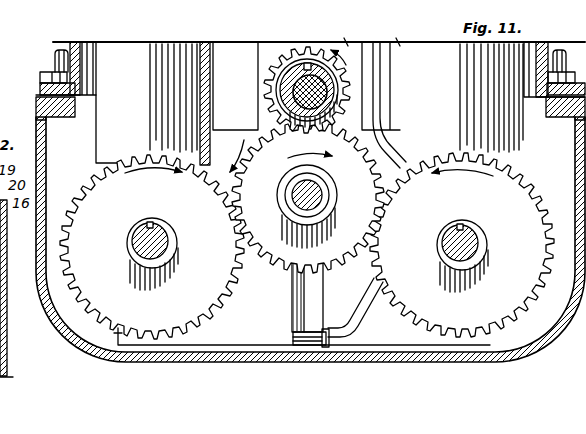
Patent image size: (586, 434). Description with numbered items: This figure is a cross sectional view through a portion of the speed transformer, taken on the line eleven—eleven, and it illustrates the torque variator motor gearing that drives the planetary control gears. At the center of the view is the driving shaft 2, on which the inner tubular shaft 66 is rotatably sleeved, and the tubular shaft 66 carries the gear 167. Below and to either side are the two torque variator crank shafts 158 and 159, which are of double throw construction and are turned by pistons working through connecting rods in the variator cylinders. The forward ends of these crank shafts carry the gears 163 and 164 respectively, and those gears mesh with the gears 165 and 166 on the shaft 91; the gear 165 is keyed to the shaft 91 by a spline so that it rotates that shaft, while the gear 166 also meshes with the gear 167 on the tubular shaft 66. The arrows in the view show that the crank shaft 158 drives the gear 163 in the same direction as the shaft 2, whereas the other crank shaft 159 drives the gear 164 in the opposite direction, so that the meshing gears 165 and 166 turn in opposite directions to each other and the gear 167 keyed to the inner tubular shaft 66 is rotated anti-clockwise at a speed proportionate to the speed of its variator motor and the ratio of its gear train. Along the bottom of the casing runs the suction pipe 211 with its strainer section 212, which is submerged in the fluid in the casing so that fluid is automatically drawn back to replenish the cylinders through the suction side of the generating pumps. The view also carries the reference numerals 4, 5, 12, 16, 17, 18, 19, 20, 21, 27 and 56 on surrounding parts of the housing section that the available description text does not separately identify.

The driving shaft 2 is at (296, 98).
The cover plate 4 is at (97, 127).
The roller 5 is at (522, 148).
The housing 12 is at (112, 351).
The housing flange block 16 is at (37, 96).
The cover flange 17 is at (72, 42).
The housing wall 18 is at (53, 313).
The bolt 19 is at (56, 62).
The nut 20 is at (42, 85).
The housing flange block 21 is at (560, 120).
The bolt 27 is at (564, 58).
The shaft 56 is at (292, 5).
The tubular shaft 66 is at (286, 87).
The shaft 91 is at (294, 200).
The crank shaft 158 is at (158, 233).
The crank shaft 159 is at (468, 233).
The gear 163 is at (200, 322).
The gear 164 is at (382, 272).
The gear 165 is at (232, 188).
The gear 166 is at (284, 252).
The gear 167 is at (282, 118).
The suction pipe 211 is at (381, 62).
The strainer section 212 is at (294, 335).